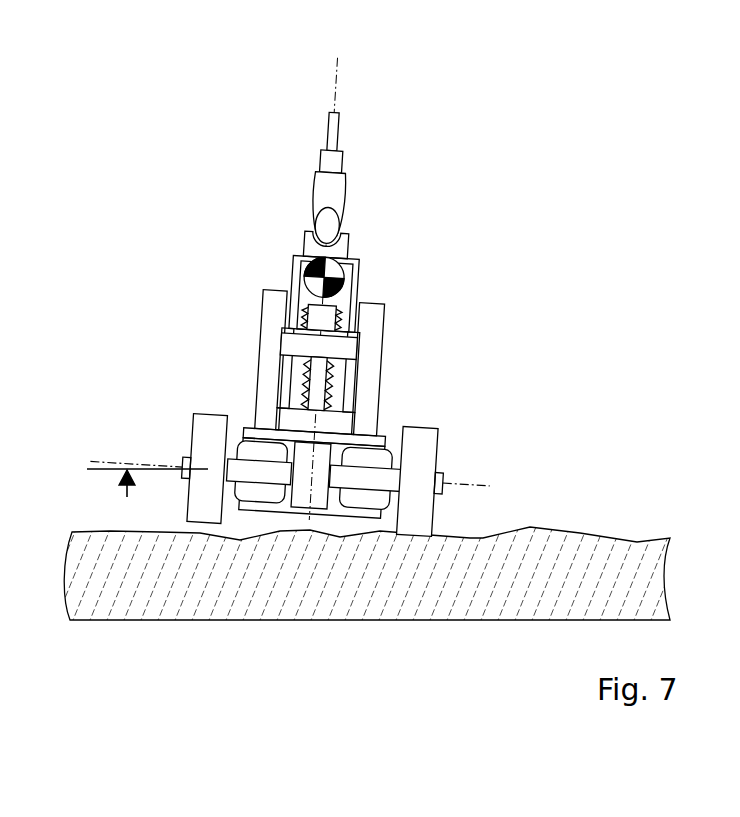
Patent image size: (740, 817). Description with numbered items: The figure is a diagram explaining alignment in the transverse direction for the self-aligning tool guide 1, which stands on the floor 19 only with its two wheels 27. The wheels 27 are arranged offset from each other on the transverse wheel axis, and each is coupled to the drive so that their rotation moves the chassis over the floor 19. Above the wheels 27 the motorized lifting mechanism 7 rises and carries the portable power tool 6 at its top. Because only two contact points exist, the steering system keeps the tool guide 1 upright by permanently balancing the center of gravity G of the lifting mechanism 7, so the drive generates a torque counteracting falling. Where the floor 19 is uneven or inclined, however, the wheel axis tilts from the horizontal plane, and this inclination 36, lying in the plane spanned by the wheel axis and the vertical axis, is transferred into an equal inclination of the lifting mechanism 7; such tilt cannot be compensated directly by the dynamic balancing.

The self-aligning tool guide 1 is at (262, 112).
The portable power tool 6 is at (327, 220).
The center of gravity G is at (323, 276).
The motorized lifting mechanism 7 is at (327, 343).
The floor 19 is at (583, 529).
The wheels 27 is at (200, 510).
The inclination 36 is at (127, 452).